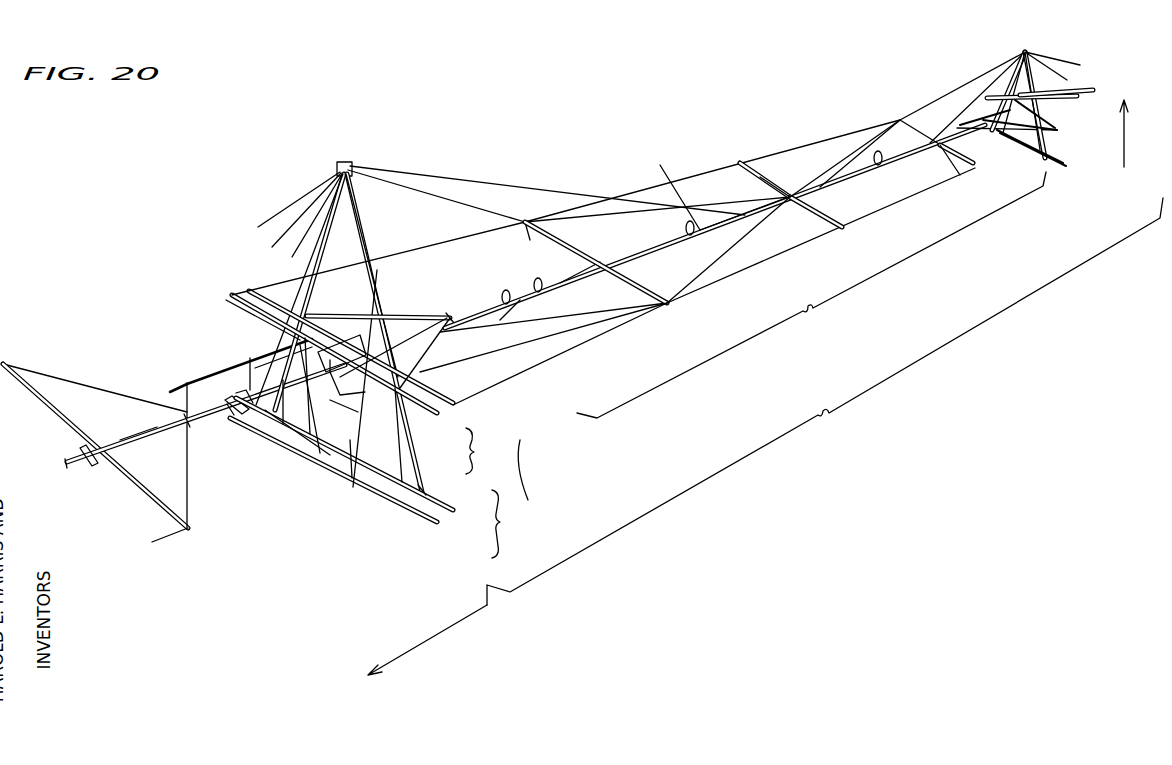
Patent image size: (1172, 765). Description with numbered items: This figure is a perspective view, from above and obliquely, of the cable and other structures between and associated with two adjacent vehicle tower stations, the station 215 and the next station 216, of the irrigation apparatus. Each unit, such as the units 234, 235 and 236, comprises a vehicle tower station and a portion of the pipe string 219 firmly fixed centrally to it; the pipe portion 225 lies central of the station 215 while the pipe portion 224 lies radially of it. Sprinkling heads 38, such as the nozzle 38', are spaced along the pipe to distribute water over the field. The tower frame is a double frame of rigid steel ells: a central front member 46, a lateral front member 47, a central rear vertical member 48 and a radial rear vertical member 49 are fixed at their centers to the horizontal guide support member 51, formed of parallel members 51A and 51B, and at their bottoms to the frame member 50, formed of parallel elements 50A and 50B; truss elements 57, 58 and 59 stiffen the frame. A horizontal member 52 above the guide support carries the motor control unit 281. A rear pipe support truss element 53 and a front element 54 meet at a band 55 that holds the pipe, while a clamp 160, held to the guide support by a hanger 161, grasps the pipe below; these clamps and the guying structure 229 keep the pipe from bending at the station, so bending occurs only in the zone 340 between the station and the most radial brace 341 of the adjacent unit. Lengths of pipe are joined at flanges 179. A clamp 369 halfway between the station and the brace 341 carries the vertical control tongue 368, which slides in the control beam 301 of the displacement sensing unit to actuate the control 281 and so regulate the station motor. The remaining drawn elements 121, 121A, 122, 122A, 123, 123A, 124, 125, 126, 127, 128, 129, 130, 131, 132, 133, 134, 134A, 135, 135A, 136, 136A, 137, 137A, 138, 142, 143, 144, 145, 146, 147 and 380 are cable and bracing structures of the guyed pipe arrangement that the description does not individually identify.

The sprinkling head 38 is at (715, 226).
The irrigating nozzle 38' is at (205, 416).
The rigid central front member 46 is at (418, 492).
The rigid lateral front member 47 is at (392, 470).
The rigid central rear vertical member 48 is at (283, 422).
The rigid radial rear vertical member 49 is at (290, 346).
The frame member 50 is at (506, 524).
The frame element 50A is at (452, 500).
The frame element 50B is at (437, 524).
The rigid horizontal guide support member 51 is at (482, 451).
The guide support member 51A is at (455, 408).
The guide support member 51B is at (440, 410).
The horizontal rigid member 52 is at (340, 330).
The rear pipe support truss element 53 is at (385, 313).
The front pipe support truss element 54 is at (427, 352).
The band 55 is at (448, 316).
The rigid truss element 57 is at (352, 486).
The rigid truss element 58 is at (320, 455).
The rigid truss element 59 is at (312, 440).
The lower chord 121 is at (630, 290).
The chord connector 121A is at (575, 268).
The outrigger bar 122 is at (810, 215).
The outrigger bar 122A is at (772, 195).
The outrigger bar 123 is at (972, 166).
The outrigger connection 123A is at (940, 150).
The cable 124 is at (482, 229).
The lower chord 125 is at (627, 325).
The chord junction 126 is at (522, 226).
The lower chord 127 is at (570, 317).
The upper chord 128 is at (574, 212).
The web brace 129 is at (690, 240).
The diagonal brace 130 is at (840, 153).
The diagonal brace 131 is at (877, 180).
The chord junction 132 is at (907, 112).
The tower base bar 133 is at (980, 155).
The tower 134 is at (380, 212).
The pipe coupling 134A is at (512, 298).
The cable 135 is at (413, 190).
The cable 135A is at (657, 220).
The cable 136 is at (528, 186).
The brace 136A is at (668, 182).
The brace 137 is at (868, 135).
The brace 137A is at (800, 183).
The cable 138 is at (967, 107).
The outrigger foot 142 is at (170, 535).
The outrigger post 143 is at (190, 494).
The outrigger cable 144 is at (20, 370).
The cable 145 is at (258, 226).
The cable 146 is at (278, 240).
The cable 147 is at (292, 257).
The clamp 160 is at (325, 380).
The hanger 161 is at (360, 378).
The flange 179 is at (536, 290).
The vehicle tower station 215 is at (540, 470).
The tower station 216 is at (1022, 50).
The pipe string 219 is at (1093, 90).
The pipe portion 224 is at (80, 448).
The pipe portion 225 is at (672, 265).
The pipe guying assembly 229 is at (811, 295).
The unit 234 is at (427, 644).
The unit 235 is at (825, 401).
The unit 236 is at (1126, 148).
The motor control unit 281 is at (342, 330).
The control beam 301 is at (226, 364).
The pipe portion zone 340 is at (155, 420).
The brace 341 is at (140, 490).
The control tongue 368 is at (188, 386).
The clamp 369 is at (192, 418).
The coupling 380 is at (238, 420).